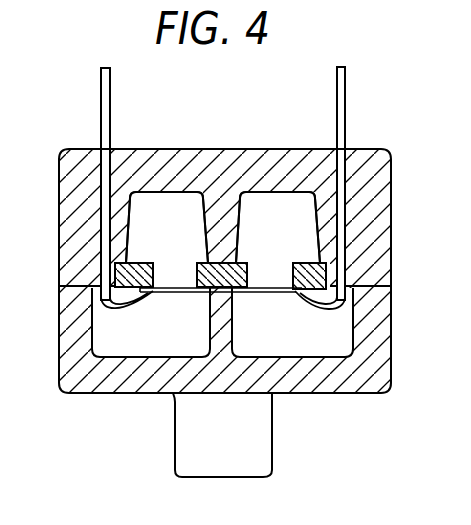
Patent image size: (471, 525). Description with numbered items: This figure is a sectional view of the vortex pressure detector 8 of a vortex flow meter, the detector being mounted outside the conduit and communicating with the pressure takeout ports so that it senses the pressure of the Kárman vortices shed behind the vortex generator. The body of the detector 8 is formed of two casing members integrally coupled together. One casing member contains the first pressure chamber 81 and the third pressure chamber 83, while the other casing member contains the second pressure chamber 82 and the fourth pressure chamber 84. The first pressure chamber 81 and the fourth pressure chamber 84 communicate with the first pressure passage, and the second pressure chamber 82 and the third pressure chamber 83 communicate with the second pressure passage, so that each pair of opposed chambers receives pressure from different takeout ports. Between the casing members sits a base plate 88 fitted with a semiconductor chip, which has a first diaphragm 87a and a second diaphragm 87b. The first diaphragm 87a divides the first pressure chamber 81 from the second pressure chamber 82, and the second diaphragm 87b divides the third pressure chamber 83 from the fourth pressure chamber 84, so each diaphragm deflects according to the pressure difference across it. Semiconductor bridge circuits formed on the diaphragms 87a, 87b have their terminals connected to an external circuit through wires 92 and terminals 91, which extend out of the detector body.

The vortex pressure detector 8 is at (377, 106).
The first pressure chamber 81 is at (98, 343).
The second pressure chamber 82 is at (165, 200).
The third pressure chamber 83 is at (345, 342).
The fourth pressure chamber 84 is at (273, 200).
The first diaphragm 87a is at (182, 294).
The second diaphragm 87b is at (262, 294).
The base plate 88 is at (298, 262).
The terminals 91 is at (101, 84).
The wires 92 is at (126, 308).